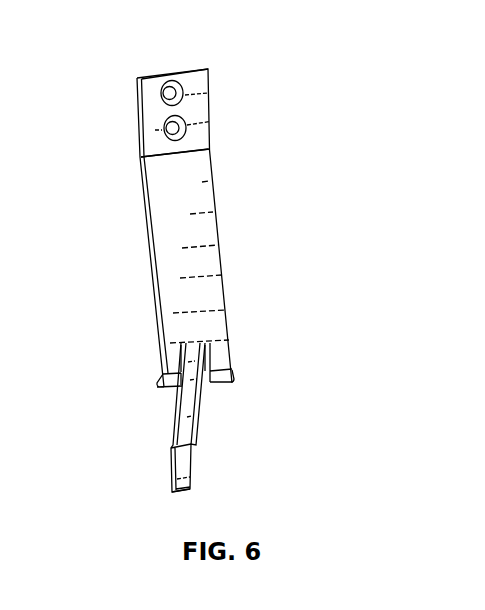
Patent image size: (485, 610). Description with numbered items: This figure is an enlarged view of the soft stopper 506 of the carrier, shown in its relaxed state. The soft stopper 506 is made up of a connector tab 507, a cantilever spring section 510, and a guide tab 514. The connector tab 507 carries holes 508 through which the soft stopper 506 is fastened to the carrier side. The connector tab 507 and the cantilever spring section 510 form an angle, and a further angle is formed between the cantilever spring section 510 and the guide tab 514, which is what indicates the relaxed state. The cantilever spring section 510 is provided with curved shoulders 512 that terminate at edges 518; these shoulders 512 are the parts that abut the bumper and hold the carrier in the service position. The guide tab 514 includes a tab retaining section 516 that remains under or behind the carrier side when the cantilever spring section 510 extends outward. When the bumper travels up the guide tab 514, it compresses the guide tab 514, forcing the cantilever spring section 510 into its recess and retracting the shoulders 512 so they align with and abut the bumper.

The soft stopper 506 is at (212, 61).
The connector tab 507 is at (150, 143).
The holes 508 is at (168, 127).
The cantilever spring section 510 is at (182, 273).
The curved shoulders 512 is at (160, 375).
The guide tab 514 is at (196, 437).
The tab retaining section 516 is at (190, 484).
The edges 518 is at (163, 394).